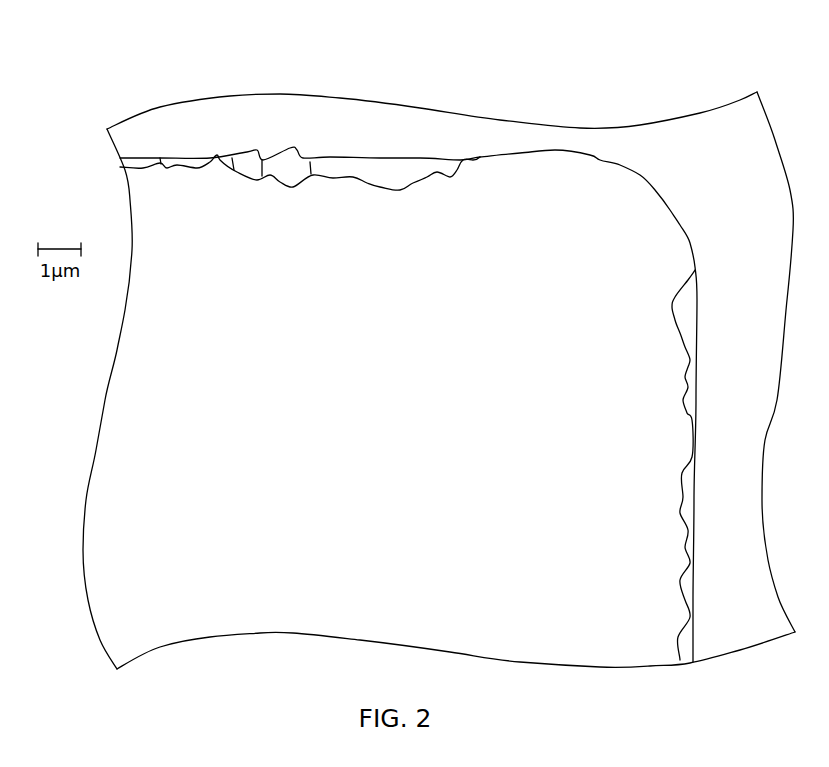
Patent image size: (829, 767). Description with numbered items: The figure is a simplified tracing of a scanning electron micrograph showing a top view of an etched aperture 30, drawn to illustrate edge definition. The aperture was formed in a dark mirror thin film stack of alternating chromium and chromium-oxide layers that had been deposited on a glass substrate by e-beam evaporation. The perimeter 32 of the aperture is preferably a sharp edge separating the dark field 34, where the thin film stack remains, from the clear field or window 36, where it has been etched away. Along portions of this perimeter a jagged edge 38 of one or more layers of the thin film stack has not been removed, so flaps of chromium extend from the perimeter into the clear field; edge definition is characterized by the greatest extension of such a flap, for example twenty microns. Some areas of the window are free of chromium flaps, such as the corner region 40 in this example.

The etched aperture 30 is at (636, 84).
The perimeter 32 is at (597, 158).
The dark field 34 is at (731, 309).
The clear field 36 is at (366, 423).
The jagged edge 38 is at (403, 190).
The corner region 40 is at (592, 190).